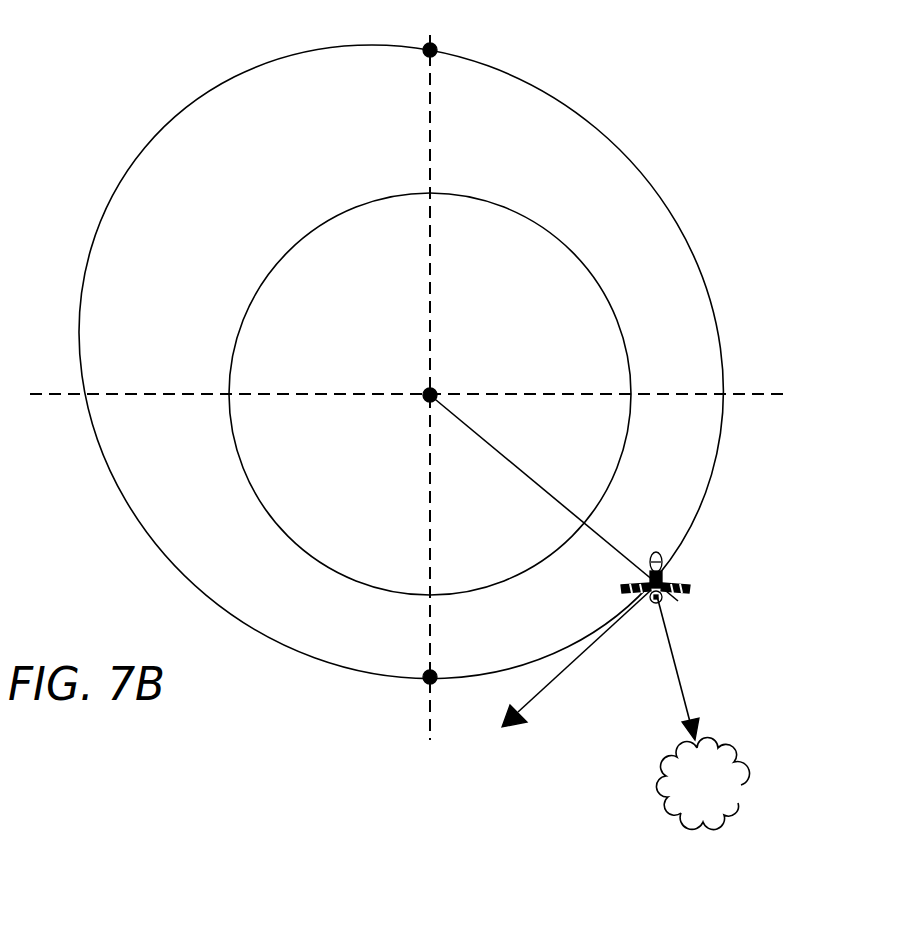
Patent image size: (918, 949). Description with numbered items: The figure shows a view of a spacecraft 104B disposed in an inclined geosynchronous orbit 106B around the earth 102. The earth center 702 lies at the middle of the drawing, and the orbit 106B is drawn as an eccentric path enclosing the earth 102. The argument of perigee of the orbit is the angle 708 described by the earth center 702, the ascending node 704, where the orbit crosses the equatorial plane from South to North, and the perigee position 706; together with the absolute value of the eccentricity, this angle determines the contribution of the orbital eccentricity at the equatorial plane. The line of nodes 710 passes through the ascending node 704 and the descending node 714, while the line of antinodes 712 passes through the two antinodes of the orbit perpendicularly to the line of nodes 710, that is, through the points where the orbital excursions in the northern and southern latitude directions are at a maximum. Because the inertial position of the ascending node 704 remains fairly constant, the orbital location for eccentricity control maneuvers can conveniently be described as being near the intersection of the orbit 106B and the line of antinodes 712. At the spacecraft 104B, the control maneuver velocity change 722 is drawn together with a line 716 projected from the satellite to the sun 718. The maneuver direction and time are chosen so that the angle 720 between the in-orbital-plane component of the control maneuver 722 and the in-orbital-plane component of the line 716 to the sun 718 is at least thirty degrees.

The earth 102 is at (256, 304).
The inclined geosynchronous orbit 106B is at (723, 358).
The spacecraft 104B is at (650, 577).
The earth center 702 is at (430, 376).
The ascending node 704 is at (428, 668).
The perigee position 706 is at (664, 577).
The argument of perigee angle 708 is at (462, 447).
The line of nodes 710 is at (428, 705).
The line of antinodes 712 is at (158, 393).
The descending node 714 is at (436, 50).
The line projected from the satellite to the sun 716 is at (676, 661).
The sun 718 is at (722, 750).
The angle between maneuver and sun line 720 is at (648, 615).
The control maneuver ΔV 722 is at (548, 685).